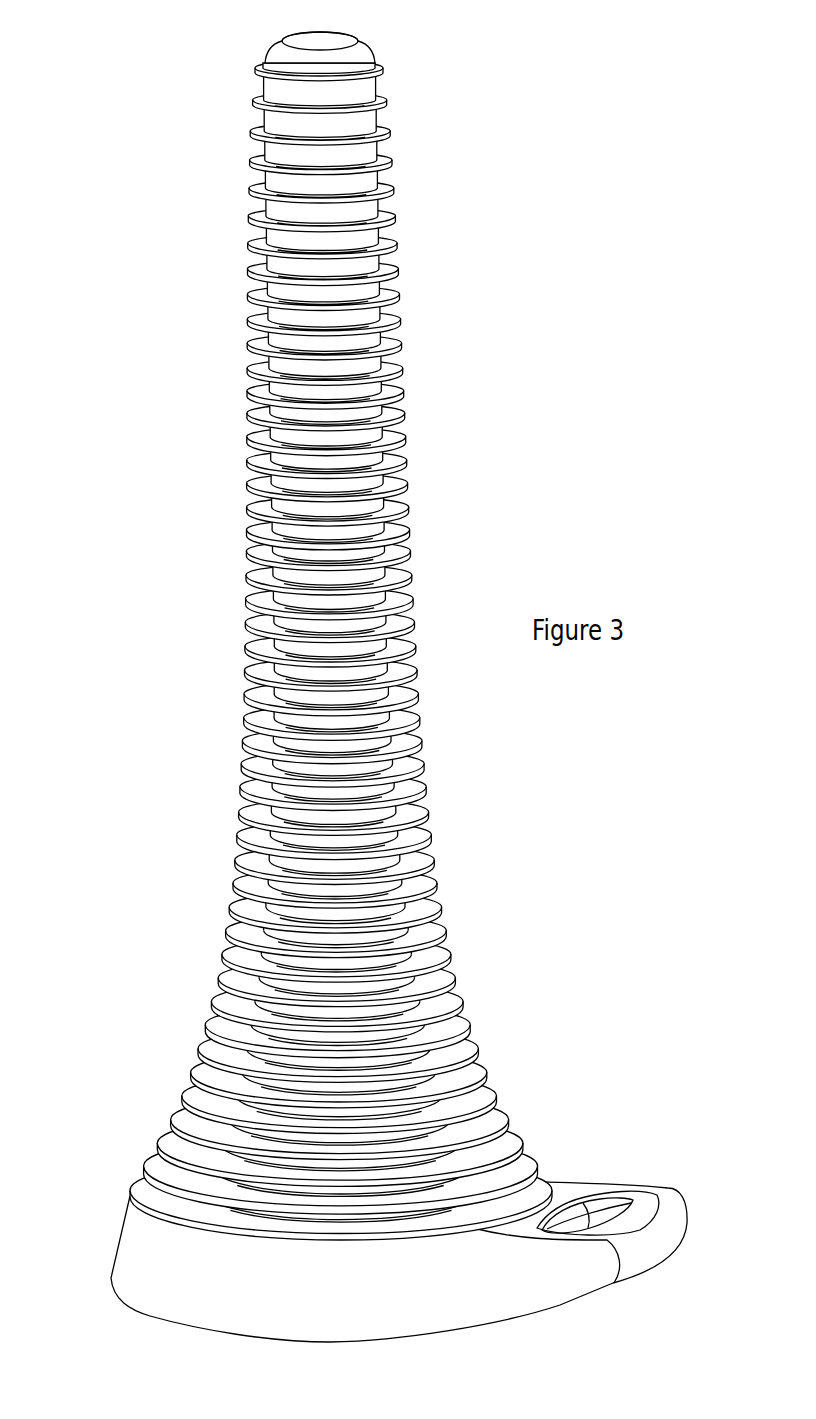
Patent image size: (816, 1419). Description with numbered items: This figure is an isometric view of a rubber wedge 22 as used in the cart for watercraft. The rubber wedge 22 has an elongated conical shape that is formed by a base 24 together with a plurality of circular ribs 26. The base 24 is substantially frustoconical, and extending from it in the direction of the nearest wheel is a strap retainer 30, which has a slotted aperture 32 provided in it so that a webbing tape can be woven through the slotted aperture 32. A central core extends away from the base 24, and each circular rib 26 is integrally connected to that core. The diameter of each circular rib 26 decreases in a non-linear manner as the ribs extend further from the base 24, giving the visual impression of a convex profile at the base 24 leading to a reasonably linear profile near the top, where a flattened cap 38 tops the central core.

The rubber wedge 22 is at (391, 671).
The base 24 is at (128, 1248).
The circular ribs 26 is at (250, 417).
The strap retainer 30 is at (678, 1193).
The slotted aperture 32 is at (600, 1208).
The flattened cap 38 is at (367, 34).